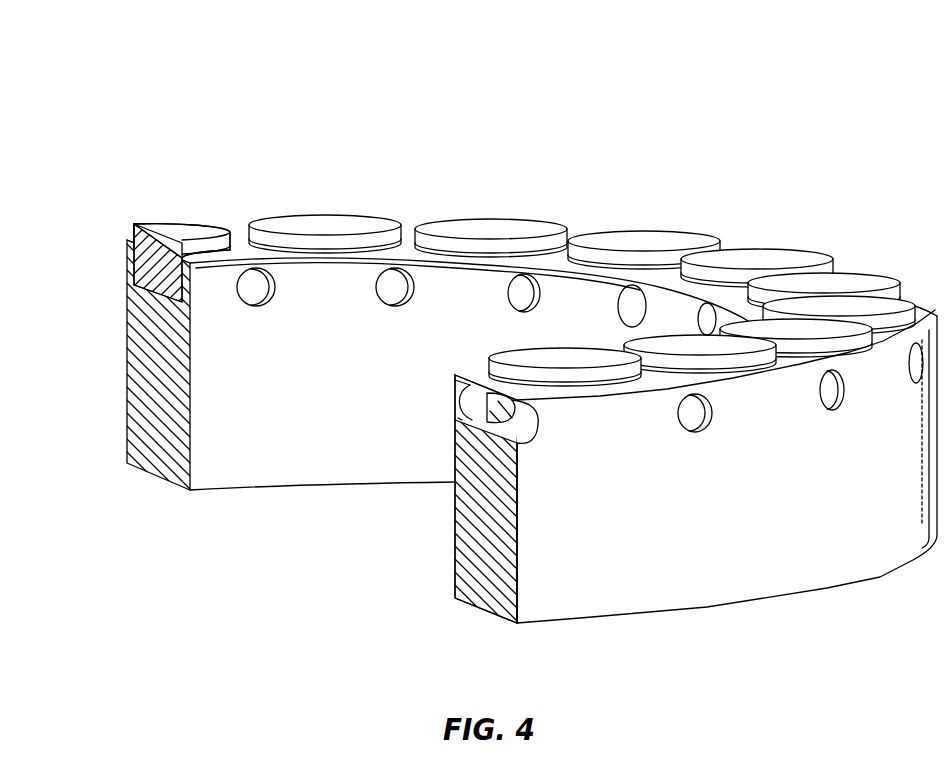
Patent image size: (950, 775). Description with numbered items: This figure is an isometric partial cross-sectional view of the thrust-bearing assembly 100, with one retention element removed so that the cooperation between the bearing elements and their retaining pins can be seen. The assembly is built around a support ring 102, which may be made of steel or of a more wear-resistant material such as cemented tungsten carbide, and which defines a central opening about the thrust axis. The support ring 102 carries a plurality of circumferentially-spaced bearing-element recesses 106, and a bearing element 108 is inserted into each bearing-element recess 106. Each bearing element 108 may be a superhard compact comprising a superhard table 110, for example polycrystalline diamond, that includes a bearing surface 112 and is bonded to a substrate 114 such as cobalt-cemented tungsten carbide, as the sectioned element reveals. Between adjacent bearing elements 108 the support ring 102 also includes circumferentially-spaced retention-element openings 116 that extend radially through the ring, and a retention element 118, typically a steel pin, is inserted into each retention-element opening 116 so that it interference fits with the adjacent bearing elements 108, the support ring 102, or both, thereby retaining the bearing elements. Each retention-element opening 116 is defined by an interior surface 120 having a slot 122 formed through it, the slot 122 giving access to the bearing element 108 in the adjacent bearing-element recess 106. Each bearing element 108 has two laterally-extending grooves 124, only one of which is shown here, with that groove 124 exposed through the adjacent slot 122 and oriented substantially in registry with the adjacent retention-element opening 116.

The thrust-bearing assembly 100 is at (746, 105).
The support ring 102 is at (797, 559).
The bearing-element recess 106 is at (150, 297).
The bearing element 108 is at (164, 206).
The superhard table 110 is at (136, 239).
The bearing surface 112 is at (187, 233).
The substrate 114 is at (130, 265).
The retention-element opening 116 is at (396, 286).
The retention element 118 is at (393, 305).
The interior surface 120 is at (500, 410).
The slot 122 is at (533, 417).
The groove 124 is at (502, 440).